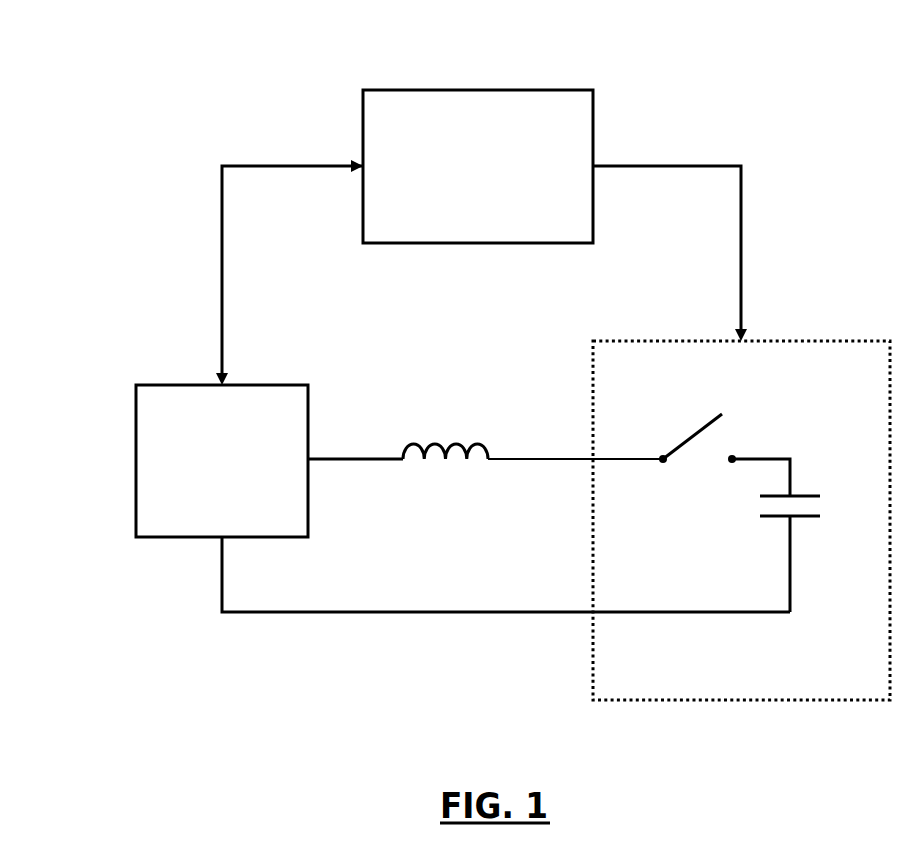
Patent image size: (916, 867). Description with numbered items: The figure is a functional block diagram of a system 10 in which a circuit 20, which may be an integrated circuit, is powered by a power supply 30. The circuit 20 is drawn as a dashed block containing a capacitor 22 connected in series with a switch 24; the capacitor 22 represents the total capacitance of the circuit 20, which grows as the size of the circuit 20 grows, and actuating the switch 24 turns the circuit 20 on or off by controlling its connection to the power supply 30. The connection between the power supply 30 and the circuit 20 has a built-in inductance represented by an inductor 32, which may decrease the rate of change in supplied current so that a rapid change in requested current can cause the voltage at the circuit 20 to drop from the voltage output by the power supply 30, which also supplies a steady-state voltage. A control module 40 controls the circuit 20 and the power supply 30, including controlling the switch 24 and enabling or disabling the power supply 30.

The system 10 is at (130, 37).
The circuit 20 is at (743, 700).
The capacitor 22 is at (825, 474).
The switch 24 is at (692, 472).
The power supply 30 is at (136, 459).
The inductor 32 is at (447, 424).
The control module 40 is at (478, 90).